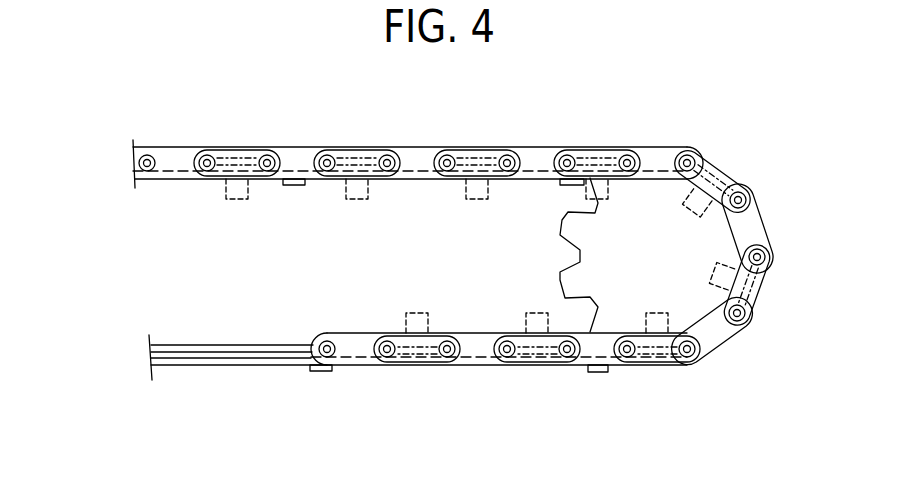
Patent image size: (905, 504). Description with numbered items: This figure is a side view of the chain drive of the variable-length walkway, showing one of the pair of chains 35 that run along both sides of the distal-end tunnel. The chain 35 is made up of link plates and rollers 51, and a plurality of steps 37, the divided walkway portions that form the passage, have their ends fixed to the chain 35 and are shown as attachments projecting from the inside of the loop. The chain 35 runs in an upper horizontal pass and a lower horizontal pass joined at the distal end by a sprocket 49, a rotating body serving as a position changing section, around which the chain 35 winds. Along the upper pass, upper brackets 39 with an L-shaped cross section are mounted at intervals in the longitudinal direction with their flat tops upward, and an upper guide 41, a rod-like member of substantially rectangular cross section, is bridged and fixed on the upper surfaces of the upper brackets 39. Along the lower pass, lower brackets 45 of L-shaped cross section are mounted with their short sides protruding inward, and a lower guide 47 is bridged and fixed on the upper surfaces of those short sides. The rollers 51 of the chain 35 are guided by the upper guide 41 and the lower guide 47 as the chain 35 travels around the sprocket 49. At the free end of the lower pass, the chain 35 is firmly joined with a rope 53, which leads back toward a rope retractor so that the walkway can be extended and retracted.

The chains 35 is at (597, 147).
The steps 37 is at (398, 299).
The upper brackets 39 is at (294, 187).
The upper guides 41 is at (432, 186).
The lower brackets 45 is at (322, 373).
The lower guides 47 is at (279, 367).
The sprockets 49 is at (560, 287).
The rollers 51 is at (264, 150).
The rope 53 is at (247, 344).